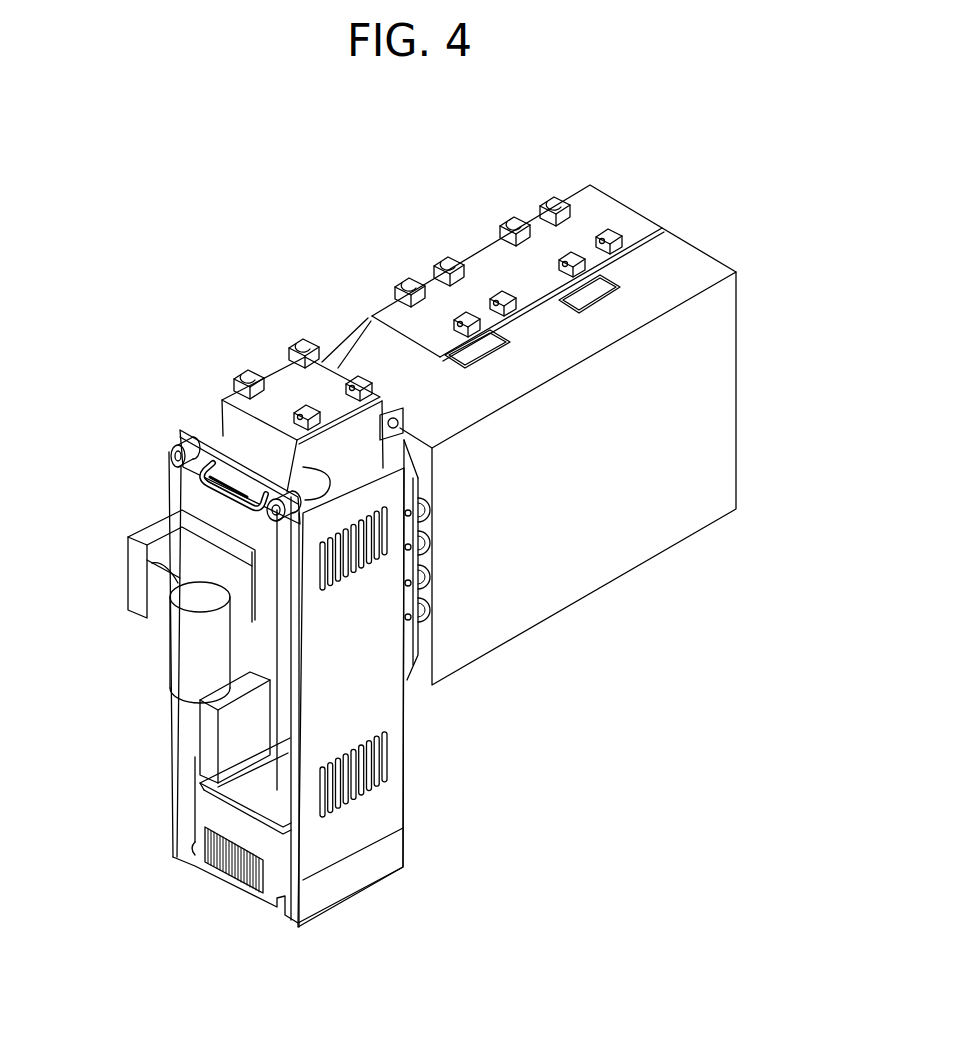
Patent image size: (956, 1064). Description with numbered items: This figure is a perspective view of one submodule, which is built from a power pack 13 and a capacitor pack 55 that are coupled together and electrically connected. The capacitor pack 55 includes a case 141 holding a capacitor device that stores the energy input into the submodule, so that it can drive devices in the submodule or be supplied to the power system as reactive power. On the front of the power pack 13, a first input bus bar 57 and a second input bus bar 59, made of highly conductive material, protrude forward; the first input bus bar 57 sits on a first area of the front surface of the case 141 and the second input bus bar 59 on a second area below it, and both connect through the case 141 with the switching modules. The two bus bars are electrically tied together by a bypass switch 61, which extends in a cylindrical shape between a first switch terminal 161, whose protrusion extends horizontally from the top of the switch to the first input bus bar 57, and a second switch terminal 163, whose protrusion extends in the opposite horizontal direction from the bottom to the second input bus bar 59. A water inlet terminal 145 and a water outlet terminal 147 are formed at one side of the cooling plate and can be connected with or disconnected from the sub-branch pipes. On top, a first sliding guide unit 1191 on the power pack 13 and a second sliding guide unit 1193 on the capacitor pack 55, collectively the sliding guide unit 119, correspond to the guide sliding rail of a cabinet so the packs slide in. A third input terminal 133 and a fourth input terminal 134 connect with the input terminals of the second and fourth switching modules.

The power pack 13 is at (380, 900).
The capacitor pack 55 is at (752, 497).
The first input bus bar 57 is at (112, 562).
The second input bus bar 59 is at (182, 755).
The bypass switch 61 is at (165, 673).
The sliding guide unit 119 is at (475, 143).
The first sliding guide unit 1191 is at (271, 352).
The second sliding guide unit 1193 is at (465, 225).
The third input terminal 133 is at (270, 587).
The fourth input terminal 134 is at (273, 712).
The case 141 is at (373, 808).
The water inlet terminal 145 is at (171, 459).
The water outlet terminal 147 is at (268, 511).
The first switch terminal 161 is at (198, 596).
The second switch terminal 163 is at (200, 702).